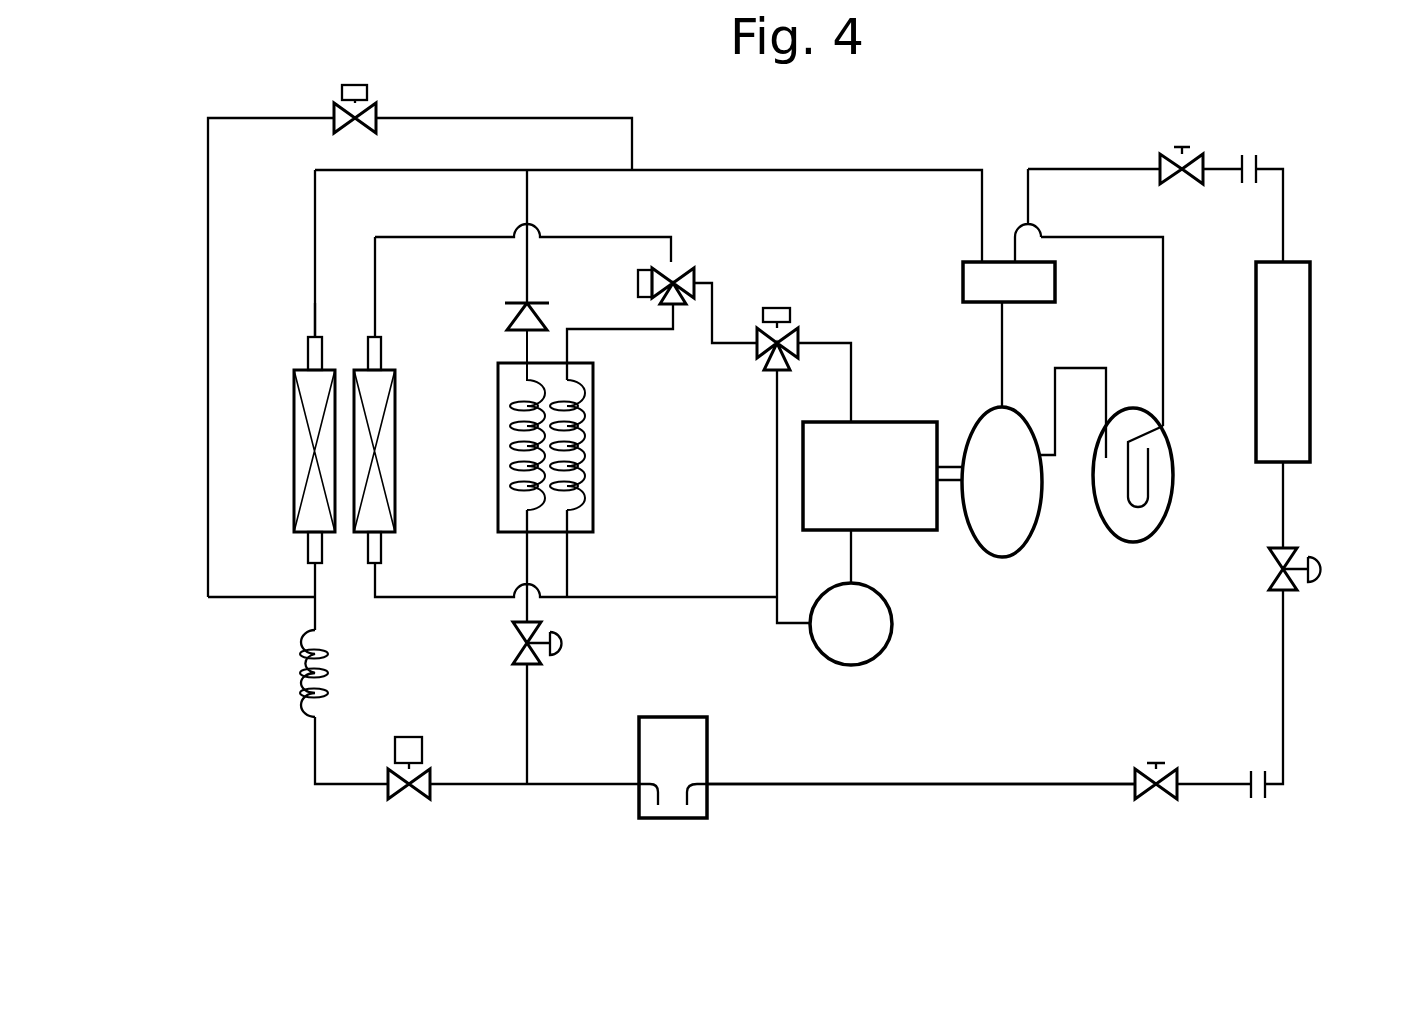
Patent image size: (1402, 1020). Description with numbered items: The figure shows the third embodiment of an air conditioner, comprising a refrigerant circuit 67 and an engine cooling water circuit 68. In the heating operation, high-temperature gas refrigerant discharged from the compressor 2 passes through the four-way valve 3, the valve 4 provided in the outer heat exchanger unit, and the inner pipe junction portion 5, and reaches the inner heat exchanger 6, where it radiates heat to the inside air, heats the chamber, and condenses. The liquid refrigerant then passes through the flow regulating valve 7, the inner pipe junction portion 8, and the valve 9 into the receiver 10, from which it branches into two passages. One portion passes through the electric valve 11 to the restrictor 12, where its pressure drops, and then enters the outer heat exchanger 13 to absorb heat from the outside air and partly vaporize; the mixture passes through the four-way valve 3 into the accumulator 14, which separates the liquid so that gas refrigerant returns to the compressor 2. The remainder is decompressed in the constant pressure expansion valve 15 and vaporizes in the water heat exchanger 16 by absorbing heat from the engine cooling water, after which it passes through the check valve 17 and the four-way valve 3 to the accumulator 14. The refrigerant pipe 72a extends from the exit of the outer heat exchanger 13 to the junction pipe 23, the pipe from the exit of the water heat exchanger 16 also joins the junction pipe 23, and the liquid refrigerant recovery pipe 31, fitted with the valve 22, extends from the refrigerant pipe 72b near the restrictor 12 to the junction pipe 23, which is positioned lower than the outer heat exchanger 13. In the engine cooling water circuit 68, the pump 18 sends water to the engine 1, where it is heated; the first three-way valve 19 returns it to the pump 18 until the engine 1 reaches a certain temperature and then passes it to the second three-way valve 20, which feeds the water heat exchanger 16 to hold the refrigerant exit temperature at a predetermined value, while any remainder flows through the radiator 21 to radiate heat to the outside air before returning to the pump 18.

The engine 1 is at (905, 530).
The compressor 2 is at (1018, 555).
The four-way valve 3 is at (1055, 282).
The valve 4 is at (1170, 185).
The inner pipe junction portion 5 is at (1245, 185).
The inner heat exchanger 6 is at (1310, 372).
The flow regulating valve 7 is at (1320, 550).
The inner pipe junction portion 8 is at (1247, 793).
The valve 9 is at (1137, 757).
The receiver 10 is at (707, 753).
The electric valve 11 is at (413, 793).
The restrictor 12 is at (328, 675).
The outer heat exchanger 13 is at (294, 437).
The accumulator 14 is at (1135, 540).
The constant pressure expansion valve 15 is at (568, 643).
The water heat exchanger 16 is at (593, 447).
The check valve 17 is at (512, 318).
The pump 18 is at (867, 665).
The first three-way valve 19 is at (781, 308).
The second three-way valve 20 is at (697, 267).
The radiator 21 is at (397, 482).
The valve 22 is at (367, 91).
The junction pipe 23 is at (807, 169).
The liquid refrigerant recovery pipe 31 is at (208, 383).
The refrigerant circuit 67 is at (1052, 798).
The engine cooling water circuit 68 is at (631, 233).
The refrigerant pipe 72a is at (315, 303).
The refrigerant pipe 72b is at (312, 582).